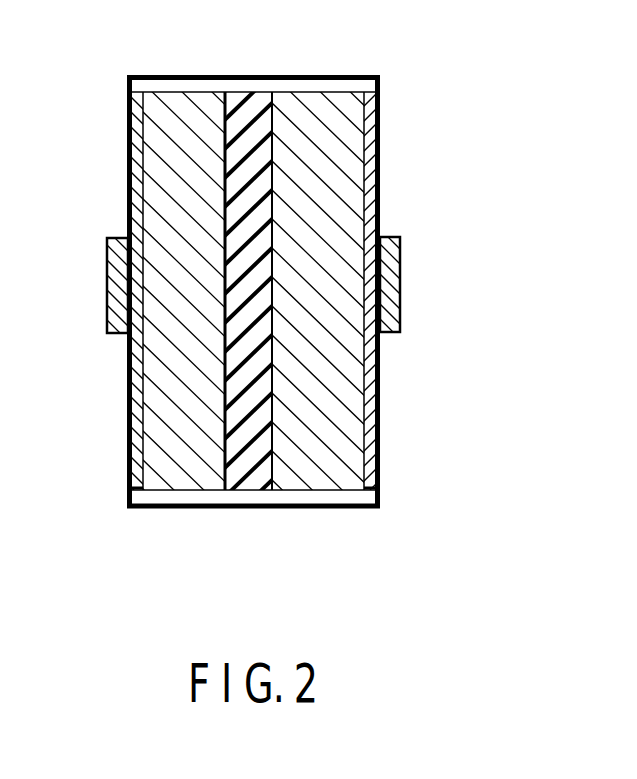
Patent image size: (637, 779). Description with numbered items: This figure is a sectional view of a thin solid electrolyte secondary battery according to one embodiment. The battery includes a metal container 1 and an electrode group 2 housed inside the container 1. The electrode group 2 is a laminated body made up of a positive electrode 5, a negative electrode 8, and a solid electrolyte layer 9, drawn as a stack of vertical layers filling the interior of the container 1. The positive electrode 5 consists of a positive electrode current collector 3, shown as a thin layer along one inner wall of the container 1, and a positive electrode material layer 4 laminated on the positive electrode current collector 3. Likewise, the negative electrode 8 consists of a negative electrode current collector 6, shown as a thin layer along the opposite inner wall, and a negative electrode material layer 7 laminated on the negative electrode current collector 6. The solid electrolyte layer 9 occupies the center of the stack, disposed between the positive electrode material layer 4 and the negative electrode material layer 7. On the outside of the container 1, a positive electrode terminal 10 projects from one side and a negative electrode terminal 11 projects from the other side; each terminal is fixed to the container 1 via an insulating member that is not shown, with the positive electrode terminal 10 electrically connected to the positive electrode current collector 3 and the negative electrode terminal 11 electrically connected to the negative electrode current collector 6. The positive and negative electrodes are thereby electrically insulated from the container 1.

The metal container 1 is at (127, 135).
The electrode group 2 is at (352, 74).
The positive electrode current collector 3 is at (372, 480).
The positive electrode material layer 4 is at (323, 488).
The positive electrode 5 is at (313, 567).
The negative electrode current collector 6 is at (135, 508).
The negative electrode material layer 7 is at (178, 491).
The negative electrode 8 is at (192, 567).
The solid electrolyte layer 9 is at (247, 490).
The positive electrode terminal 10 is at (400, 263).
The negative electrode terminal 11 is at (107, 298).